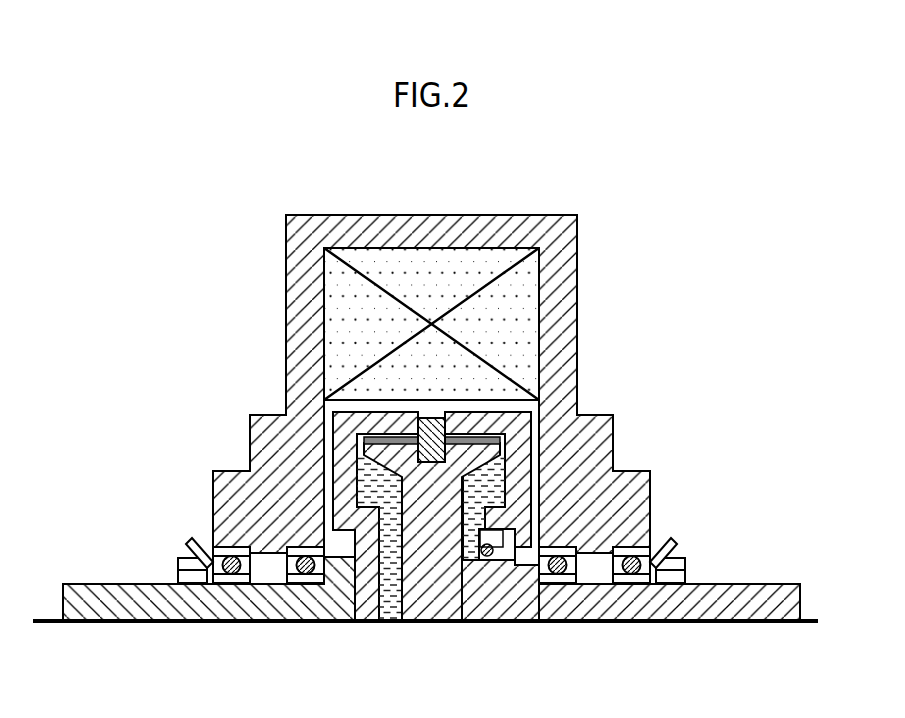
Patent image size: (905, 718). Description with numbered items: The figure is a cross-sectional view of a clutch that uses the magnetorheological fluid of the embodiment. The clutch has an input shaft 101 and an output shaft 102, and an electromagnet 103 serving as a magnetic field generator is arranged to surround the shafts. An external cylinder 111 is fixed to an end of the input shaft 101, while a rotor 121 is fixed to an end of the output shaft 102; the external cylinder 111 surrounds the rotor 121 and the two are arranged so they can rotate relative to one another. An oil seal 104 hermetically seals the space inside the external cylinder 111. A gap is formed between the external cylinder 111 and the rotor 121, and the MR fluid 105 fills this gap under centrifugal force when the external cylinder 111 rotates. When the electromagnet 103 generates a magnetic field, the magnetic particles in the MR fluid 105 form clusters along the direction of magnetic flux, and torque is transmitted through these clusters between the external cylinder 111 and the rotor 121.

The input shaft 101 is at (112, 584).
The output shaft 102 is at (755, 584).
The electromagnet 103 is at (447, 247).
The oil seal 104 is at (487, 533).
The MR fluid 105 is at (472, 527).
The external cylinder 111 is at (339, 488).
The rotor 121 is at (365, 443).